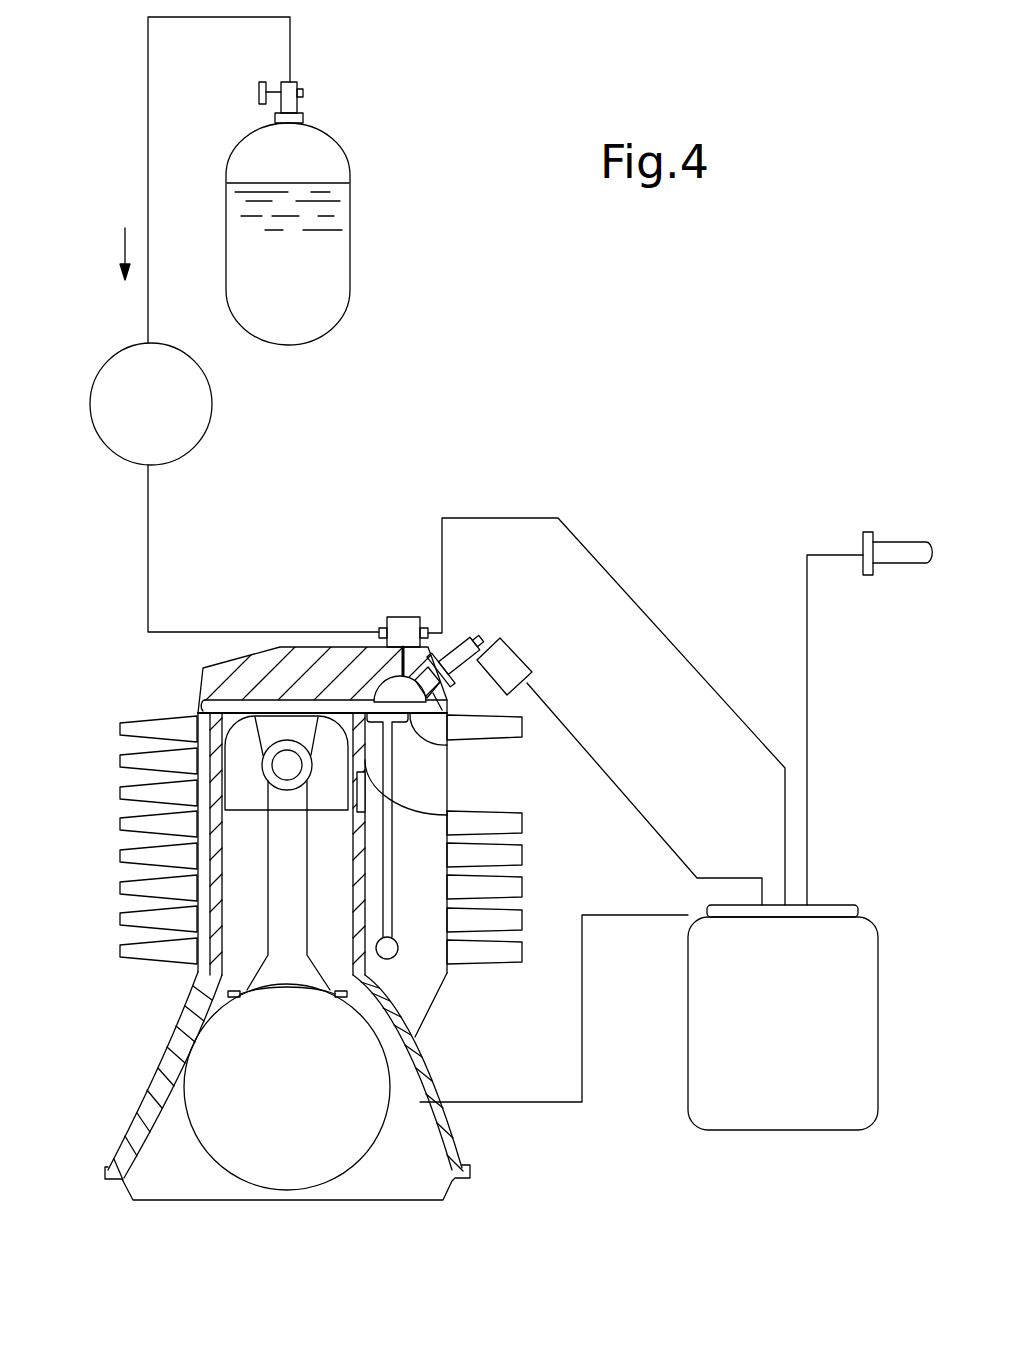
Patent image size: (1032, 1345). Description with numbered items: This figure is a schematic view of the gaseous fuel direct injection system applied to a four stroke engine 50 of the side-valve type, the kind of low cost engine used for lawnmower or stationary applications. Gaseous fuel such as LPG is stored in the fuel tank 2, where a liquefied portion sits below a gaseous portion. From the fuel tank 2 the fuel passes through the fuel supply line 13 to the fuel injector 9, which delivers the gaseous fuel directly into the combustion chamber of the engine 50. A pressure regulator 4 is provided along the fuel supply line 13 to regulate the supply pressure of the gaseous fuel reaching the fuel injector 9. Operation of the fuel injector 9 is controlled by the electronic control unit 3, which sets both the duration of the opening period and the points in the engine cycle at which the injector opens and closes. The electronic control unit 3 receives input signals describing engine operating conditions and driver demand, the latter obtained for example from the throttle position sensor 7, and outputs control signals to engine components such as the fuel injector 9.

The fuel supply line 13 is at (148, 198).
The fuel tank 2 is at (350, 195).
The pressure regulator 4 is at (212, 410).
The fuel injector 9 is at (403, 618).
The engine 50 is at (160, 694).
The throttle position sensor 7 is at (907, 532).
The electronic control unit 3 is at (878, 1000).